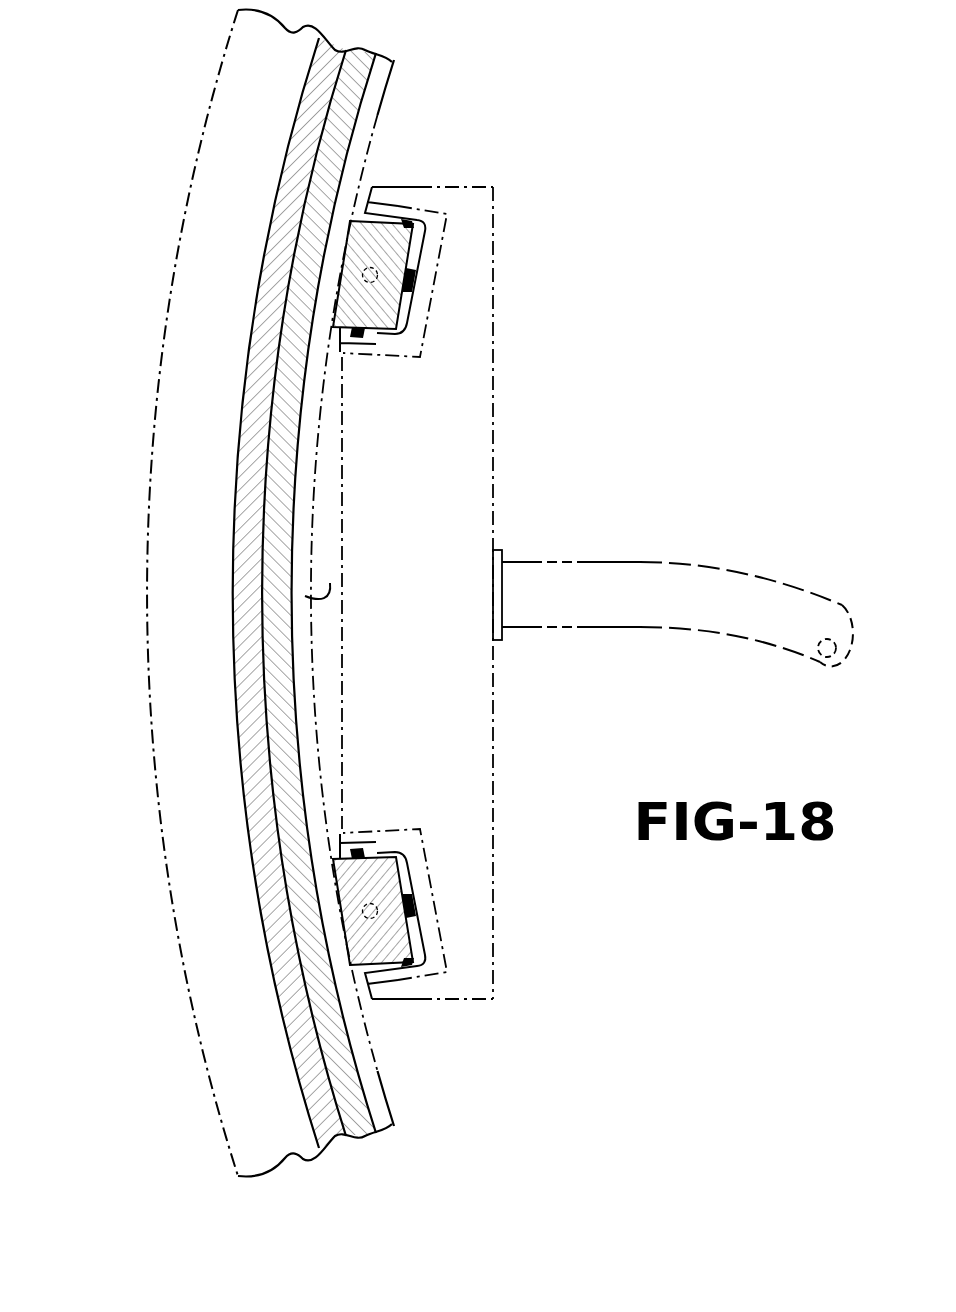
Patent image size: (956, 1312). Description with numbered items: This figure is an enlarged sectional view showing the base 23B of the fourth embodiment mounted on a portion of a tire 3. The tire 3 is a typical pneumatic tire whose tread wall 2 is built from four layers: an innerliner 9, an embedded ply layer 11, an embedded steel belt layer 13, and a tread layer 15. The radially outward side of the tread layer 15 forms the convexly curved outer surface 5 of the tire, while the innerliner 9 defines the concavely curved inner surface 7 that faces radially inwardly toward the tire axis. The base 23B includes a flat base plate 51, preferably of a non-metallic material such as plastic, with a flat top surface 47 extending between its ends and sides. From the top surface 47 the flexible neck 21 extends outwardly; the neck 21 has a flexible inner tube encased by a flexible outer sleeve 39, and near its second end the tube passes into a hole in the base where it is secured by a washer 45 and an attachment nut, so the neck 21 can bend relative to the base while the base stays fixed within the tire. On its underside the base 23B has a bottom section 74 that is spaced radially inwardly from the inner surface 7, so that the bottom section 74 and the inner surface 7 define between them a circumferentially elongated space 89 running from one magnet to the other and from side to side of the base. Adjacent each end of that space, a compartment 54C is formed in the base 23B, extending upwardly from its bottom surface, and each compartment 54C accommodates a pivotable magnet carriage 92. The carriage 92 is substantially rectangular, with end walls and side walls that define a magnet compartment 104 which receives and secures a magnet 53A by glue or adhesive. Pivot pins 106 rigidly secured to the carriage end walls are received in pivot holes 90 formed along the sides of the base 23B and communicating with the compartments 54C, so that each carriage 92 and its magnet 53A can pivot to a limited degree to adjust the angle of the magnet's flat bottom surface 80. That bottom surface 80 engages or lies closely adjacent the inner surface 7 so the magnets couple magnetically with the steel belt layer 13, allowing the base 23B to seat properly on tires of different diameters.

The tire 3 is at (218, 44).
The tread wall 2 is at (226, 83).
The tread layer 15 is at (238, 135).
The outer surface 5 is at (150, 450).
The steel belt layer 13 is at (258, 405).
The ply layer 11 is at (290, 360).
The innerliner 9 is at (388, 78).
The inner surface 7 is at (376, 1066).
The base plate 51 is at (470, 186).
The top surface 47 is at (494, 447).
The base 23B is at (496, 500).
The bottom section 74 is at (340, 538).
The circumferentially elongated space 89 is at (305, 596).
The compartment 54C is at (433, 234).
The magnet carriage 92 is at (426, 273).
The magnet 53A is at (408, 311).
The magnet compartment 104 is at (377, 331).
The bottom surface 80 is at (346, 246).
The pivot hole 90 is at (211, 593).
The pivot pin 106 is at (370, 275).
The washer 45 is at (503, 636).
The neck 21 is at (757, 577).
The outer sleeve 39 is at (745, 640).